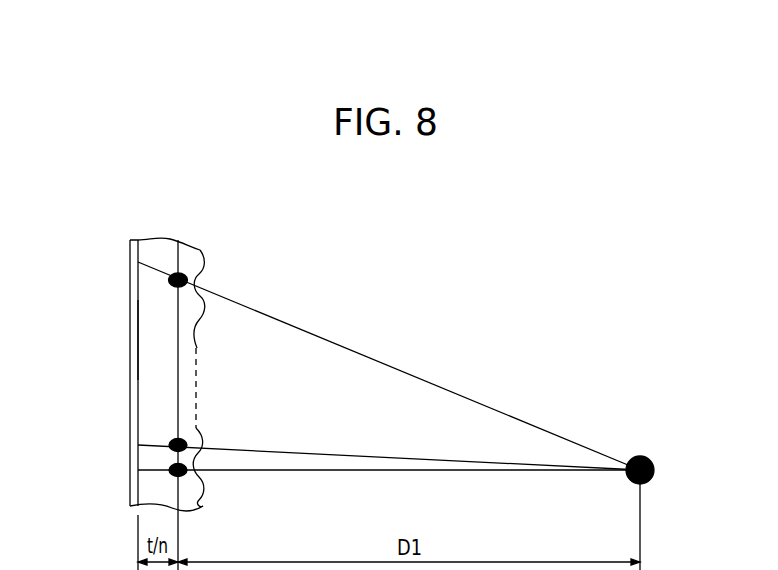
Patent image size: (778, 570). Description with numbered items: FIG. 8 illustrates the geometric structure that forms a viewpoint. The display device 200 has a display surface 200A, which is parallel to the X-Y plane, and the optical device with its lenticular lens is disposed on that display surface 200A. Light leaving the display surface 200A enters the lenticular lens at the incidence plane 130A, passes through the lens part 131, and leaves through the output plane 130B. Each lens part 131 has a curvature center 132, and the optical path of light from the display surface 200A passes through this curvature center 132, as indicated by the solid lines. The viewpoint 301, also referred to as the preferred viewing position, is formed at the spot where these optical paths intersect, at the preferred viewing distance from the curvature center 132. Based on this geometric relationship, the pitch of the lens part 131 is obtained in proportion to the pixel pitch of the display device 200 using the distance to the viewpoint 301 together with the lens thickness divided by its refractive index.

The display device 200 is at (130, 293).
The display surface 200A is at (140, 331).
The incidence plane 130A is at (139, 401).
The output plane 130B is at (203, 282).
The lens part 131 is at (197, 333).
The curvature center 132 is at (178, 273).
The viewpoint 301 is at (656, 470).